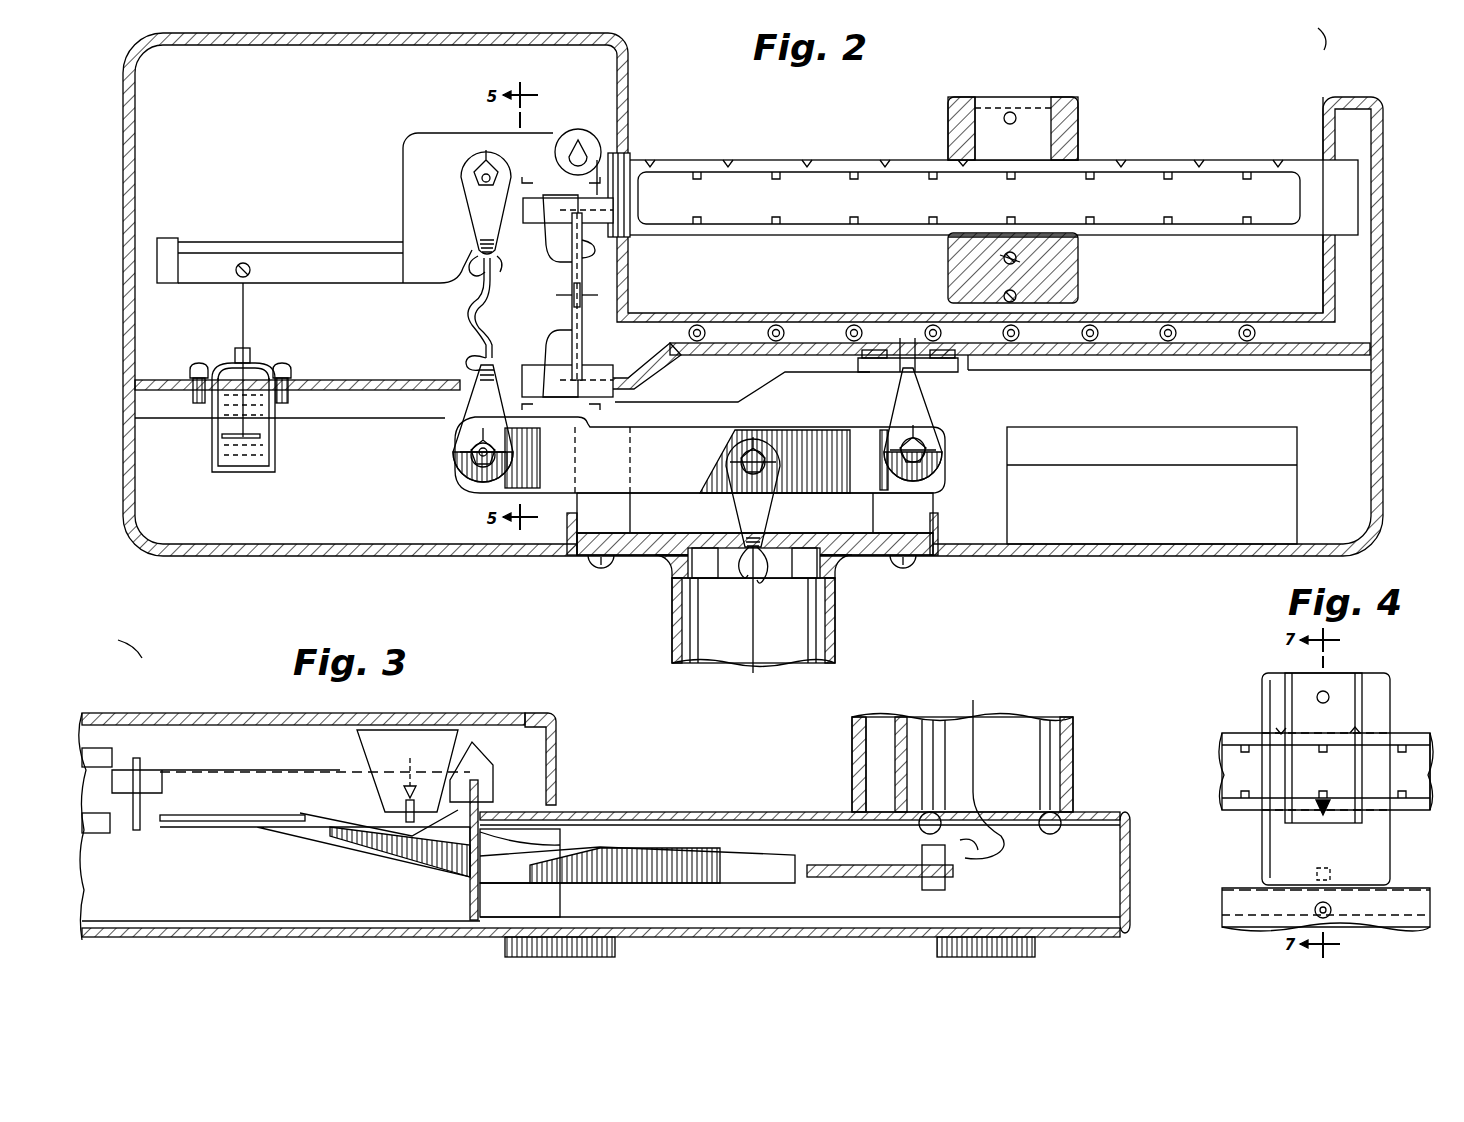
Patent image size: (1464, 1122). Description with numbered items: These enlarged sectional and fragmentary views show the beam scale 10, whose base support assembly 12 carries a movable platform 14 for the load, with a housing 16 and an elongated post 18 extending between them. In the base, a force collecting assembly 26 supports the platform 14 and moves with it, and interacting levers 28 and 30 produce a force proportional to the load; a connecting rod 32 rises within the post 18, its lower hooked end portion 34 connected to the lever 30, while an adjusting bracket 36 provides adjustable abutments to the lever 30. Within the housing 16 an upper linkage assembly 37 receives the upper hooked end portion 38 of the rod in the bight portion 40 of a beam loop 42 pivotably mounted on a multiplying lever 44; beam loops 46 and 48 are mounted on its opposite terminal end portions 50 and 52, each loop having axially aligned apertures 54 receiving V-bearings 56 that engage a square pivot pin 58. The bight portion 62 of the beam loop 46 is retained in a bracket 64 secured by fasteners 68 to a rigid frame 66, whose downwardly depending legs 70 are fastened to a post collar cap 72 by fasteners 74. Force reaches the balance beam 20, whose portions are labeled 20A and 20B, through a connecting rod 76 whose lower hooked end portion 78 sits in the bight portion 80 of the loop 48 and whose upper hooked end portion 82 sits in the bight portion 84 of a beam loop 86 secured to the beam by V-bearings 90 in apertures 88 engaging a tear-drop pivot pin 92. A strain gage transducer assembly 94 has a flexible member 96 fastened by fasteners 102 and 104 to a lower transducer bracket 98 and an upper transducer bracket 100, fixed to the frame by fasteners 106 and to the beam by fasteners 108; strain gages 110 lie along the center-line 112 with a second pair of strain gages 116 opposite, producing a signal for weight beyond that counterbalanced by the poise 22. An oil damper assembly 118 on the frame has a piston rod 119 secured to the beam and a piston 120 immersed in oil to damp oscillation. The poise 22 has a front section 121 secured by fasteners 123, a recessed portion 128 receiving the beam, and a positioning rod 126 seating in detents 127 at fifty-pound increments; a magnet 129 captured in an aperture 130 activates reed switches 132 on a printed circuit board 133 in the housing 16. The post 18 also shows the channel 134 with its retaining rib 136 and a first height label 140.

In FIG. 2, the beam scale 10 is at (1310, 36).
In FIG. 3, the beam scale 10 is at (88, 648).
In FIG. 3, the base support assembly 12 is at (780, 810).
In FIG. 3, the movable platform 14 is at (552, 712).
In FIG. 2, the housing 16 is at (123, 498).
In FIG. 4, the housing 16 is at (1405, 888).
In FIG. 2, the elongated post 18 is at (670, 645).
In FIG. 3, the elongated post 18 is at (1075, 733).
In FIG. 2, the balance beam 20 is at (830, 240).
In FIG. 4, the balance beam 20 is at (1222, 752).
In FIG. 2, the beam arm 20A is at (318, 240).
In FIG. 2, the beam end 20B is at (1278, 158).
In FIG. 4, the beam end 20B is at (1428, 745).
In FIG. 2, the poise 22 is at (1076, 100).
In FIG. 4, the poise 22 is at (1385, 672).
In FIG. 3, the force collecting assembly 26 is at (540, 758).
In FIG. 3, the lever 28 is at (190, 770).
In FIG. 3, the lever 30 is at (645, 850).
In FIG. 2, the connecting rod 32 is at (750, 673).
In FIG. 3, the connecting rod 32 is at (975, 700).
In FIG. 3, the lower hooked end portion 34 is at (1005, 848).
In FIG. 3, the adjusting bracket 36 is at (955, 872).
In FIG. 2, the upper linkage assembly 37 is at (425, 548).
In FIG. 2, the upper hooked end portion 38 is at (768, 580).
In FIG. 2, the bight portion 40 is at (745, 578).
In FIG. 2, the beam loop 42 is at (770, 510).
In FIG. 2, the multiplying lever 44 is at (812, 427).
In FIG. 2, the beam loop 46 is at (935, 378).
In FIG. 2, the beam loop 48 is at (470, 400).
In FIG. 2, the terminal end portion 50 is at (935, 468).
In FIG. 2, the terminal end portion 52 is at (460, 480).
In FIG. 2, the axially aligned apertures 54 is at (472, 445).
In FIG. 2, the V-bearing 56 is at (455, 465).
In FIG. 2, the square pivot pin 58 is at (496, 455).
In FIG. 2, the bight portion 62 is at (900, 336).
In FIG. 2, the bracket 64 is at (916, 336).
In FIG. 2, the rigid frame 66 is at (1060, 372).
In FIG. 2, the fasteners 68 is at (880, 350).
In FIG. 2, the downwardly depending legs 70 is at (580, 545).
In FIG. 2, the post collar cap 72 is at (850, 578).
In FIG. 2, the fasteners 74 is at (608, 568).
In FIG. 2, the connecting rod 76 is at (476, 310).
In FIG. 2, the lower hooked end portion 78 is at (494, 300).
In FIG. 2, the bight portion 80 is at (466, 360).
In FIG. 2, the upper hooked end portion 82 is at (478, 258).
In FIG. 2, the bight portion 84 is at (470, 275).
In FIG. 2, the beam loop 86 is at (462, 158).
In FIG. 2, the axially aligned apertures 88 is at (482, 178).
In FIG. 2, the V-bearings 90 is at (485, 160).
In FIG. 2, the pivot pin 92 is at (478, 185).
In FIG. 2, the strain gage transducer assembly 94 is at (584, 268).
In FIG. 2, the flexible member 96 is at (572, 262).
In FIG. 2, the lower transducer bracket 98 is at (660, 403).
In FIG. 2, the upper transducer bracket 100 is at (553, 165).
In FIG. 2, the fasteners 102 is at (580, 345).
In FIG. 2, the fasteners 104 is at (597, 249).
In FIG. 2, the fasteners 106 is at (548, 365).
In FIG. 2, the fasteners 108 is at (600, 230).
In FIG. 2, the first pair of strain gages 110 is at (600, 295).
In FIG. 2, the center-line 112 is at (556, 297).
In FIG. 2, the second pair of strain gages 116 is at (572, 292).
In FIG. 2, the oil damper assembly 118 is at (268, 357).
In FIG. 2, the piston rod 119 is at (240, 302).
In FIG. 2, the piston 120 is at (255, 440).
In FIG. 2, the front section 121 is at (948, 100).
In FIG. 4, the front section 121 is at (1378, 830).
In FIG. 2, the fasteners 123 is at (1010, 112).
In FIG. 4, the fasteners 123 is at (1326, 690).
In FIG. 2, the positioning rod 126 is at (960, 157).
In FIG. 4, the positioning rod 126 is at (1276, 727).
In FIG. 2, the detents 127 is at (650, 158).
In FIG. 4, the detents 127 is at (1355, 725).
In FIG. 2, the recessed portion 128 is at (975, 237).
In FIG. 2, the magnet 129 is at (1080, 290).
In FIG. 4, the magnet 129 is at (1316, 872).
In FIG. 2, the aperture 130 is at (1000, 262).
In FIG. 2, the reed switches 132 is at (697, 324).
In FIG. 4, the reed switches 132 is at (1332, 915).
In FIG. 2, the printed circuit board 133 is at (1262, 342).
In FIG. 4, the printed circuit board 133 is at (1222, 903).
In FIG. 3, the channel 134 is at (880, 724).
In FIG. 3, the retaining rib 136 is at (900, 733).
In FIG. 3, the first height label 140 is at (855, 742).